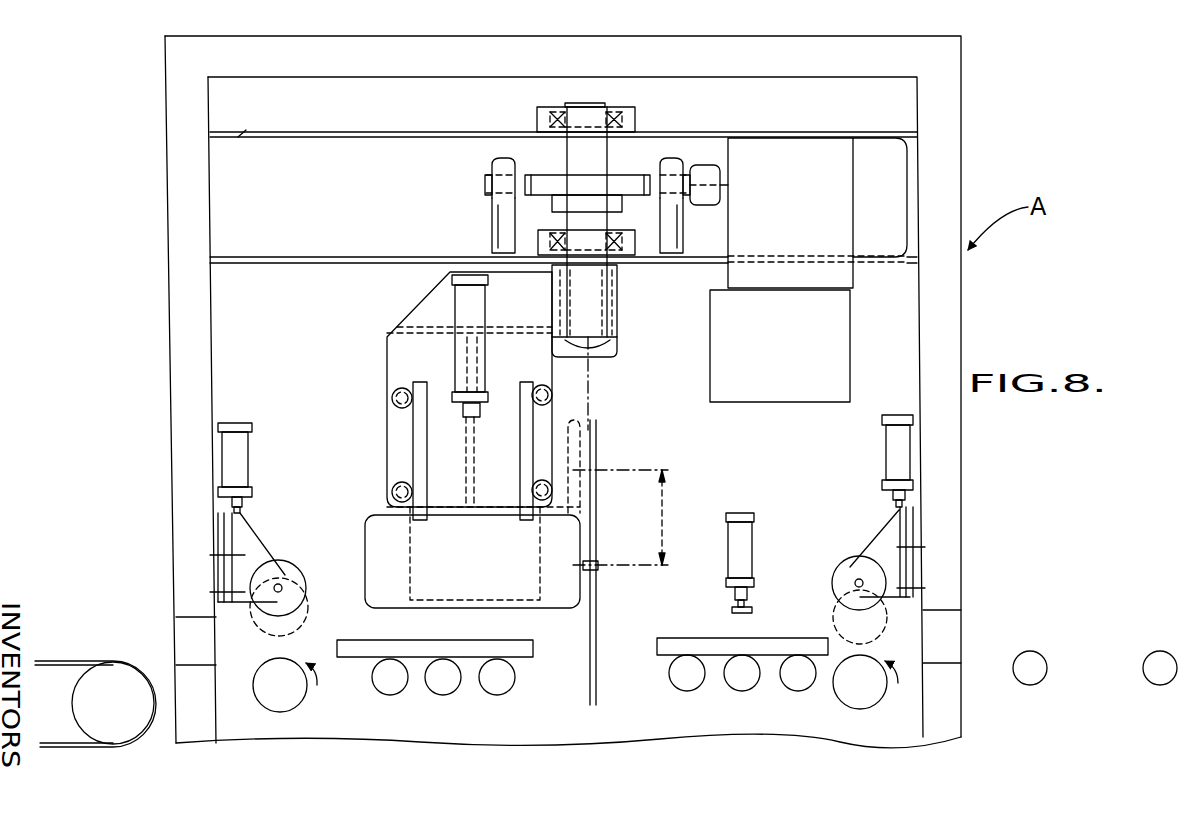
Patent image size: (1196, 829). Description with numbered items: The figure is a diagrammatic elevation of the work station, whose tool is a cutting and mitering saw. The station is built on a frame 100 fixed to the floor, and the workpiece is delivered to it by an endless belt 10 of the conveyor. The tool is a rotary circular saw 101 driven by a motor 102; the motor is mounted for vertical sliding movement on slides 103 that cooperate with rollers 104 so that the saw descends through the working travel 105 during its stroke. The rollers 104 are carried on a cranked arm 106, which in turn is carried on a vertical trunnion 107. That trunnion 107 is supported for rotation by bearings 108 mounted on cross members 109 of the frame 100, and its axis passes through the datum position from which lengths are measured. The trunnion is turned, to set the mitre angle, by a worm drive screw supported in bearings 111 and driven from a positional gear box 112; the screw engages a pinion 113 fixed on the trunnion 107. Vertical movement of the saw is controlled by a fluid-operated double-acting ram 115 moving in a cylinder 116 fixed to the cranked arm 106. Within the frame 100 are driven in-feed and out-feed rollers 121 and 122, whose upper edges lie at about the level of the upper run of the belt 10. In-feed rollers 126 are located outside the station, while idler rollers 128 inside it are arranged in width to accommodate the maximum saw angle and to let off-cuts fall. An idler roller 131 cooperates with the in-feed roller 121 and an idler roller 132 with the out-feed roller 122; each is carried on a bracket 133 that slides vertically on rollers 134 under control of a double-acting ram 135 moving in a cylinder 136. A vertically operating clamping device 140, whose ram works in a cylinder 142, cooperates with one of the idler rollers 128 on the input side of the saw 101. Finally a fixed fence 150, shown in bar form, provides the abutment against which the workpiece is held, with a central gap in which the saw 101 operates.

The endless belt 10 is at (58, 662).
The frame 100 is at (168, 198).
The circular saw 101 is at (607, 517).
The motor 102 is at (393, 583).
The slides 103 is at (533, 442).
The rollers 104 is at (552, 395).
The working travel 105 is at (664, 521).
The cranked arm 106 is at (430, 293).
The vertical trunnion 107 is at (582, 160).
The bearings 108 is at (628, 118).
The cross members 109 is at (267, 138).
The bearings 111 is at (495, 161).
The positional gear box 112 is at (808, 270).
The pinion 113 is at (620, 185).
The double-acting ram 115 is at (472, 468).
The cylinder 116 is at (470, 312).
The in-feed roller 121 is at (868, 687).
The out-feed roller 122 is at (288, 685).
The in-feed rollers 126 is at (1150, 655).
The idler rollers 128 is at (450, 680).
The idler roller 131 is at (845, 560).
The idler roller 132 is at (288, 560).
The brackets 133 is at (248, 535).
The rollers 134 is at (912, 542).
The double-acting rams 135 is at (232, 510).
The cylinders 136 is at (233, 448).
The clamping device 140 is at (783, 540).
The cylinder 142 is at (735, 547).
The fixed fence 150 is at (485, 645).